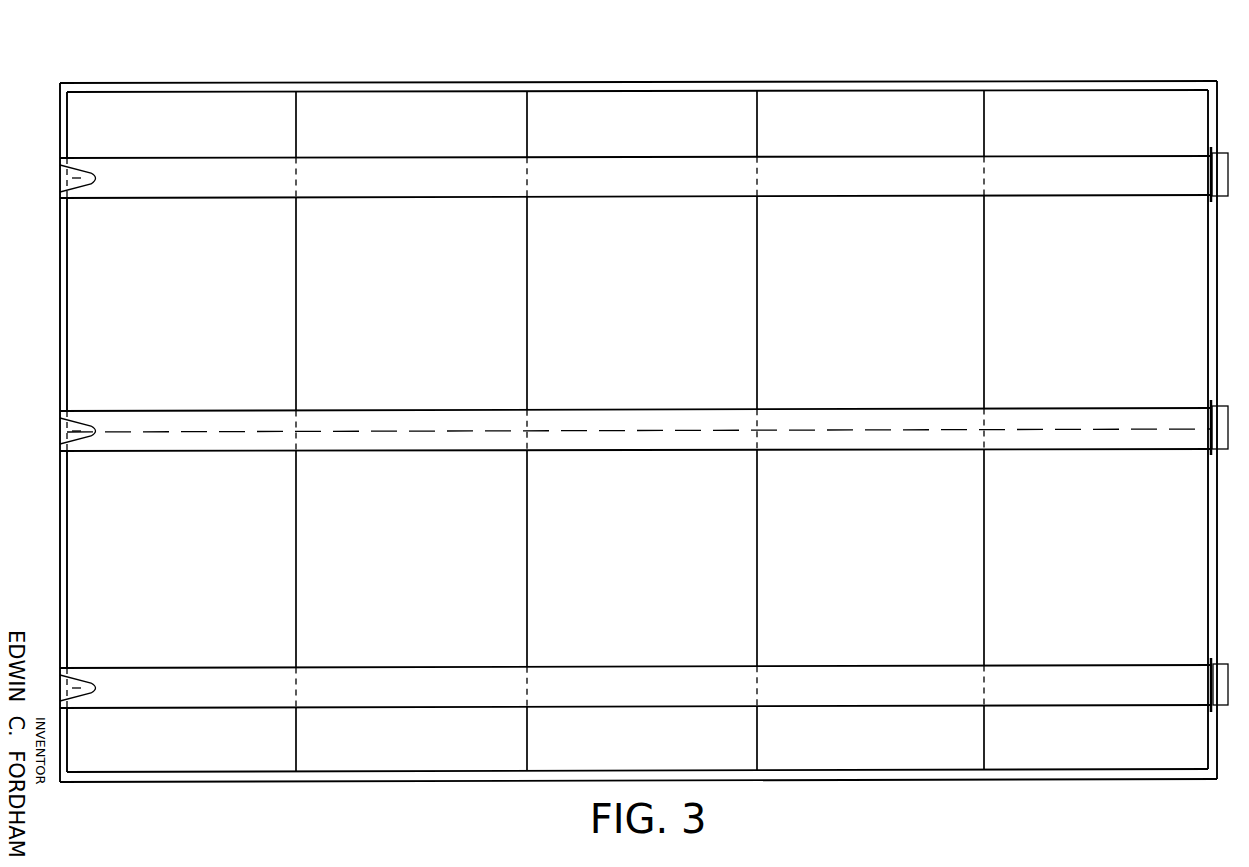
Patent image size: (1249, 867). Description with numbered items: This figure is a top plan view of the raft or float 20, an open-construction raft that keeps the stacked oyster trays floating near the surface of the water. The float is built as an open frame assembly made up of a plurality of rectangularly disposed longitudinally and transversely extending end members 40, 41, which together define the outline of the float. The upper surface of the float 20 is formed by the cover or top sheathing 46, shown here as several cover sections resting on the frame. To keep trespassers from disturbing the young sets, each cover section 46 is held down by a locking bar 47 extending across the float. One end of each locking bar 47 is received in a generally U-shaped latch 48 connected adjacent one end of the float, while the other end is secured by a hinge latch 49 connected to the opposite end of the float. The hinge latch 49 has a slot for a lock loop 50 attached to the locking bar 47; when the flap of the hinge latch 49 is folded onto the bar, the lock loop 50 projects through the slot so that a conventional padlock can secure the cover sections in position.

The raft or float 20 is at (530, 51).
The end members 40 is at (713, 88).
The end members 41 is at (1217, 125).
The cover or top sheathing 46 is at (133, 303).
The locking bar 47 is at (817, 190).
The U-shaped latch 48 is at (1206, 185).
The hinge latch 49 is at (87, 428).
The lock loop 50 is at (78, 433).